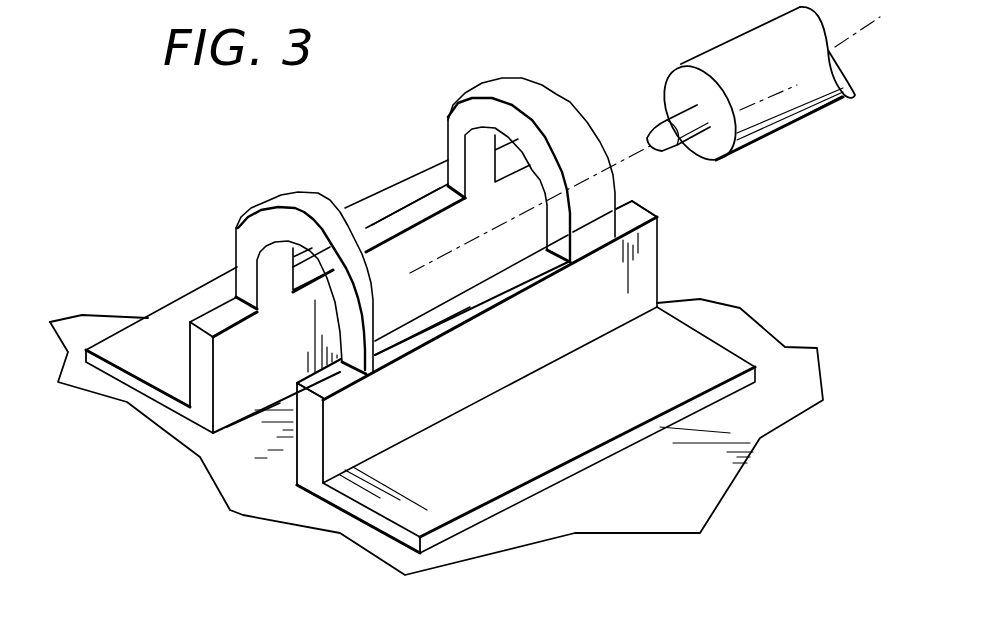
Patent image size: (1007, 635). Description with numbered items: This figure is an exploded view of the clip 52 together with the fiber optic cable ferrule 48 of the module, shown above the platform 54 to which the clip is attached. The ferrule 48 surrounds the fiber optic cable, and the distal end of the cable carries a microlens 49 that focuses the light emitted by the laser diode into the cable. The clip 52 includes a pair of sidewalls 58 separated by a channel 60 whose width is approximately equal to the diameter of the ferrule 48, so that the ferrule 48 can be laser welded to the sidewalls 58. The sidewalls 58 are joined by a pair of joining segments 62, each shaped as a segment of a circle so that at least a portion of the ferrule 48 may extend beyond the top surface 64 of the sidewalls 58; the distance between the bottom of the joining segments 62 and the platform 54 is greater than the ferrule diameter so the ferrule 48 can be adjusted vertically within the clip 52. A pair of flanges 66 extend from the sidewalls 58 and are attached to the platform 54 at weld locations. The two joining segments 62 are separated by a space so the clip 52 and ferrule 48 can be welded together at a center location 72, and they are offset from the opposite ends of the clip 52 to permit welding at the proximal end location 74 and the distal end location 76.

The ferrule 48 is at (800, 110).
The microlens 49 is at (662, 122).
The clip 52 is at (472, 286).
The platform 54 is at (436, 404).
The sidewalls 58 is at (183, 336).
The channel 60 is at (268, 376).
The joining segments 62 is at (284, 200).
The top surface 64 is at (508, 287).
The flanges 66 is at (121, 352).
The center location 72 is at (325, 200).
The proximal end location 74 is at (653, 206).
The distal end location 76 is at (342, 393).